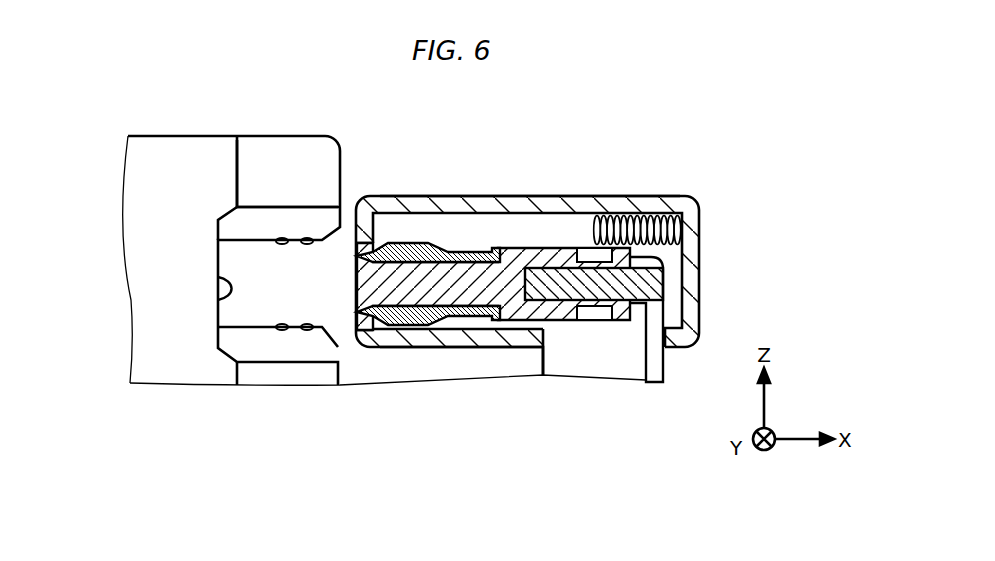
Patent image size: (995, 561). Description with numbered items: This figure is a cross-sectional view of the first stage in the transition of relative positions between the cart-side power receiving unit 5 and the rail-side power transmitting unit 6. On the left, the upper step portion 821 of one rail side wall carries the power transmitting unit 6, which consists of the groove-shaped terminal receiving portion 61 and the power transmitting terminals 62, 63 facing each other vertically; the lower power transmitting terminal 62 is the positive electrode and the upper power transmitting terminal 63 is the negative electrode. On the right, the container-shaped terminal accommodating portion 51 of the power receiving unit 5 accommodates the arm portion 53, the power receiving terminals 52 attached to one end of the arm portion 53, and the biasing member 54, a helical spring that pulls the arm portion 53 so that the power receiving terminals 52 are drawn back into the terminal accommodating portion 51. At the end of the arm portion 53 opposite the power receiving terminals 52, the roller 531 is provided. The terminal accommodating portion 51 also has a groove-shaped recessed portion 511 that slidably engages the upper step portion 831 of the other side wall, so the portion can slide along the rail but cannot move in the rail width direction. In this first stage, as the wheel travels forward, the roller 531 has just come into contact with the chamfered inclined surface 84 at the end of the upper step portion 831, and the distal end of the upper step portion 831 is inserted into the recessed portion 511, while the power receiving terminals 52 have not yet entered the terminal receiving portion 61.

The power receiving unit 5 is at (627, 197).
The power transmitting unit 6 is at (306, 282).
The terminal accommodating portion 51 is at (573, 196).
The recessed portion 511 is at (543, 337).
The power receiving terminal 52 is at (412, 244).
The arm portion 53 is at (515, 256).
The roller 531 is at (650, 285).
The biasing member 54 is at (652, 230).
The terminal receiving portion 61 is at (218, 300).
The power transmitting terminal 62 is at (307, 330).
The power transmitting terminal 63 is at (305, 239).
The upper step portion 821 is at (147, 220).
The upper step portion 831 is at (655, 368).
The inclined surface 84 is at (303, 158).